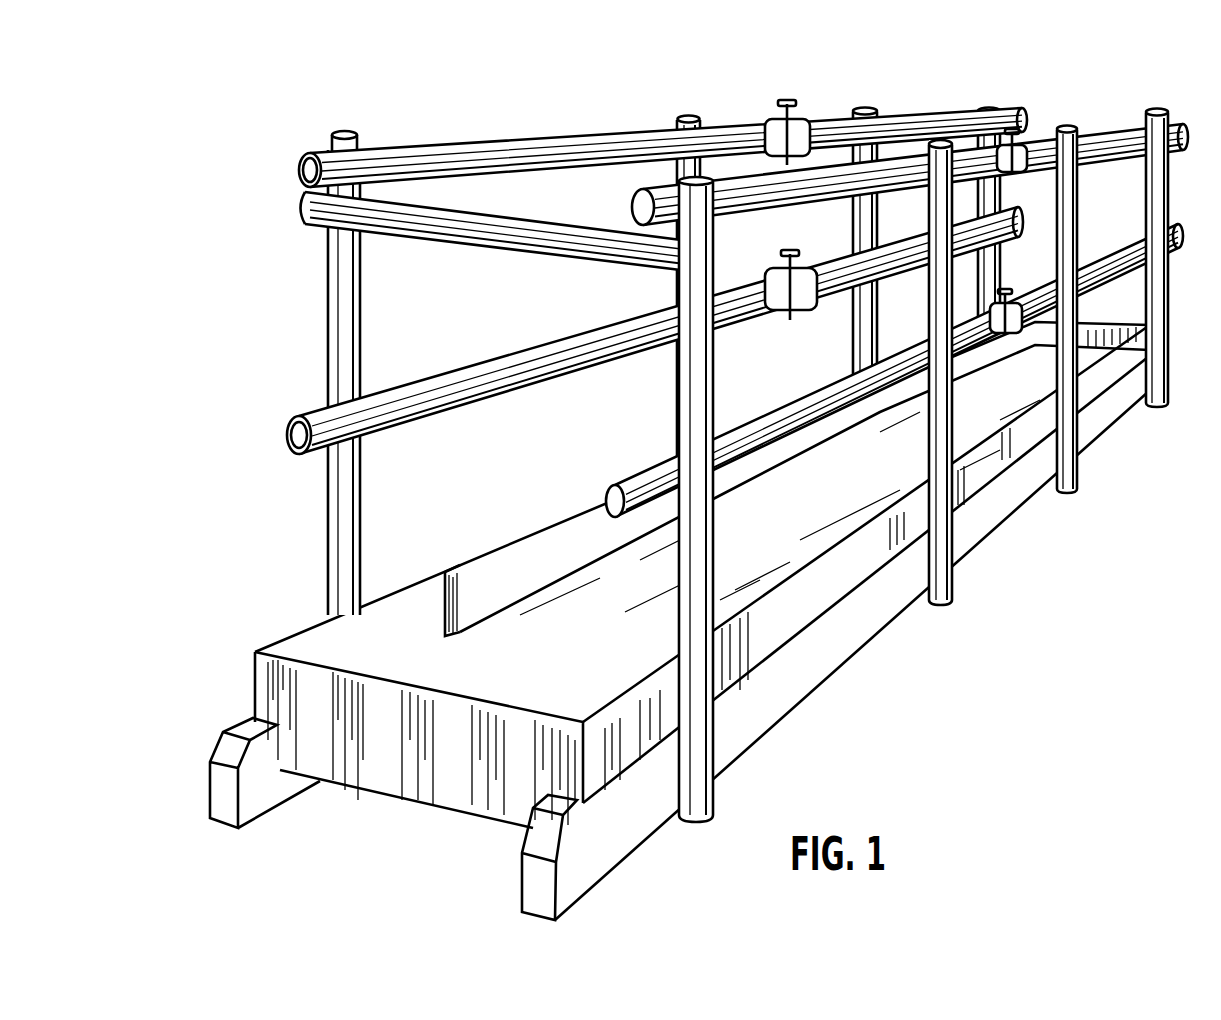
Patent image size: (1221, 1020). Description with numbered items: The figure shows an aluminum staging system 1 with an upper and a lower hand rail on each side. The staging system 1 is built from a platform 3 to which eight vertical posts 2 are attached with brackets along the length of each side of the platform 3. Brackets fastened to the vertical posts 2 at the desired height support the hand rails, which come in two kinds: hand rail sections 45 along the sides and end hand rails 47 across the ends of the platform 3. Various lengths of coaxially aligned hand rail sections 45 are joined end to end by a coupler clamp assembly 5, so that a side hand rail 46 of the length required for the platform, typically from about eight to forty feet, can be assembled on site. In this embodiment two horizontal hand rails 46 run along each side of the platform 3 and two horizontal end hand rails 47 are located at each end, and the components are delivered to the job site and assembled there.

The staging system 1 is at (701, 477).
The vertical posts 2 is at (323, 317).
The platform 3 is at (845, 665).
The coupler clamp assembly 5 is at (810, 120).
The hand rail sections 45 is at (643, 131).
The hand rail 46 is at (538, 113).
The end hand rails 47 is at (303, 213).